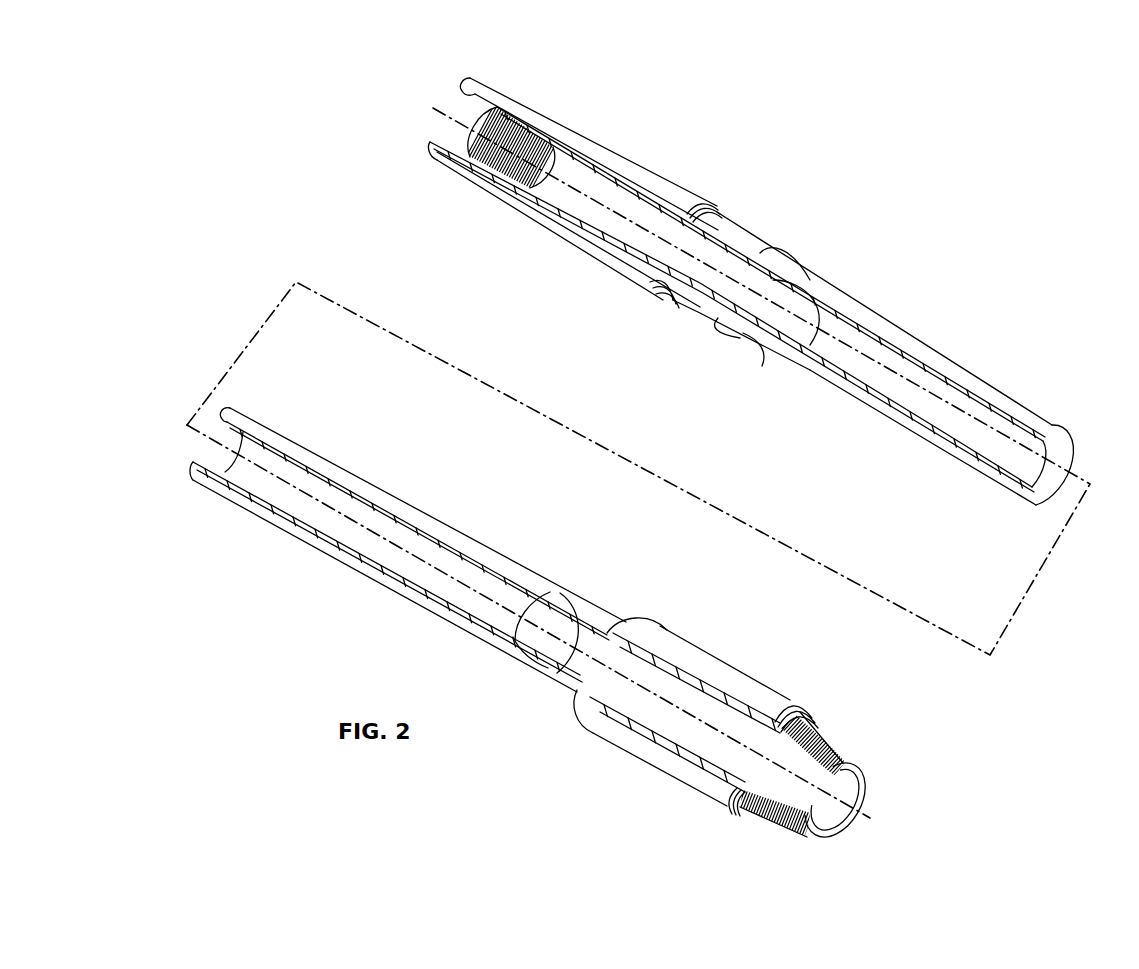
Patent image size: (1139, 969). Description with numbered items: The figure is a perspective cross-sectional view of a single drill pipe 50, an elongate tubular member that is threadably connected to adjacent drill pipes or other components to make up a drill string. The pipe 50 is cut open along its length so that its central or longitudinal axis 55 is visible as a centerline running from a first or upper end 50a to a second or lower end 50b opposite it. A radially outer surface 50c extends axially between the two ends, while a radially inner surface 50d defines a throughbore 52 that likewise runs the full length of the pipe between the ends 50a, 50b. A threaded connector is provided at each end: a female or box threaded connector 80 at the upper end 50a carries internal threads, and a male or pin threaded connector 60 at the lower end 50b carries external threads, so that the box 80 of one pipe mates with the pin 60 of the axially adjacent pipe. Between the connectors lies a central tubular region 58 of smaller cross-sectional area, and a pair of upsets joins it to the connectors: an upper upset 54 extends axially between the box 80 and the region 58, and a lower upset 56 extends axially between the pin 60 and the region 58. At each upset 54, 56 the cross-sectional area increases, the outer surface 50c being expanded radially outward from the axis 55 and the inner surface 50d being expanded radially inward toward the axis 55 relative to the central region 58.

The drill pipe 50 is at (955, 182).
The upper end 50a is at (426, 156).
The lower end 50b is at (872, 792).
The radially outer surface 50c is at (1010, 386).
The radially inner surface 50d is at (956, 438).
The throughbore 52 is at (886, 386).
The upper upset 54 is at (752, 228).
The longitudinal axis 55 is at (858, 348).
The lower upset 56 is at (536, 680).
The central tubular region 58 is at (952, 343).
The pin threaded connector 60 is at (628, 760).
The box threaded connector 80 is at (601, 134).